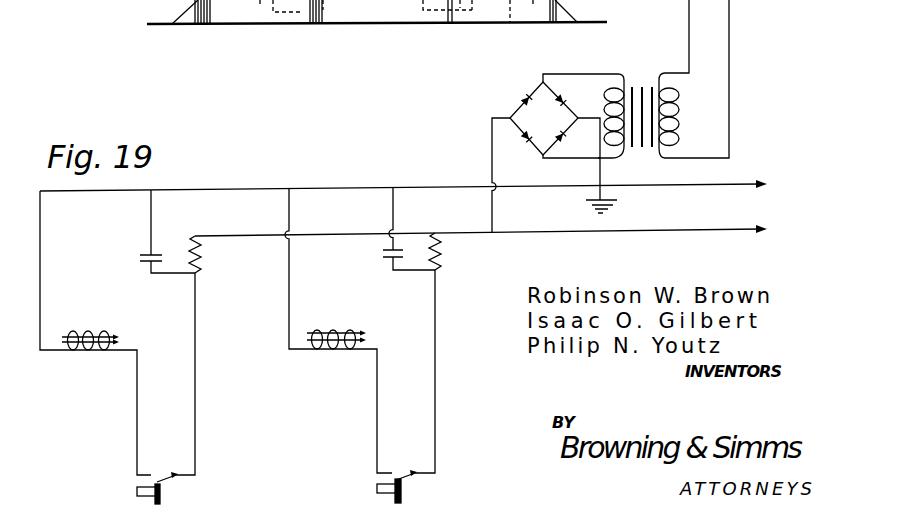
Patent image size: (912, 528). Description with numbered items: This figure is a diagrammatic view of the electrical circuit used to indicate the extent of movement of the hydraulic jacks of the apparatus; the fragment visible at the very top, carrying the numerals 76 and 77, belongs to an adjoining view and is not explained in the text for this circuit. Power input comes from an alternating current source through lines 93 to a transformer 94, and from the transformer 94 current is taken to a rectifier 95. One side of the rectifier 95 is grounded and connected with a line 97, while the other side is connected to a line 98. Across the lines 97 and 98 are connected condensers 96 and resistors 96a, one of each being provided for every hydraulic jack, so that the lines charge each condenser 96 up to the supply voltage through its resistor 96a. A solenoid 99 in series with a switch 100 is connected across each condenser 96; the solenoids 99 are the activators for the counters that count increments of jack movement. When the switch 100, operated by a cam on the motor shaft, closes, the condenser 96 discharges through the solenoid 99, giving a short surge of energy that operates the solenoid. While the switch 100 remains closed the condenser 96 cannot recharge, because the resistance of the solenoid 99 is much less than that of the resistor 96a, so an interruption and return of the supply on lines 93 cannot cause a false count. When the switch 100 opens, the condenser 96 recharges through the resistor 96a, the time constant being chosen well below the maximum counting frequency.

The support member 76 is at (440, 10).
The support member 77 is at (303, 12).
The lines 93 is at (690, 30).
The transformer 94 is at (637, 76).
The rectifier 95 is at (530, 96).
The condenser 96 is at (140, 256).
The resistor 96a is at (205, 251).
The line 97 is at (424, 186).
The line 98 is at (542, 232).
The solenoid 99 is at (89, 332).
The switch 100 is at (165, 468).